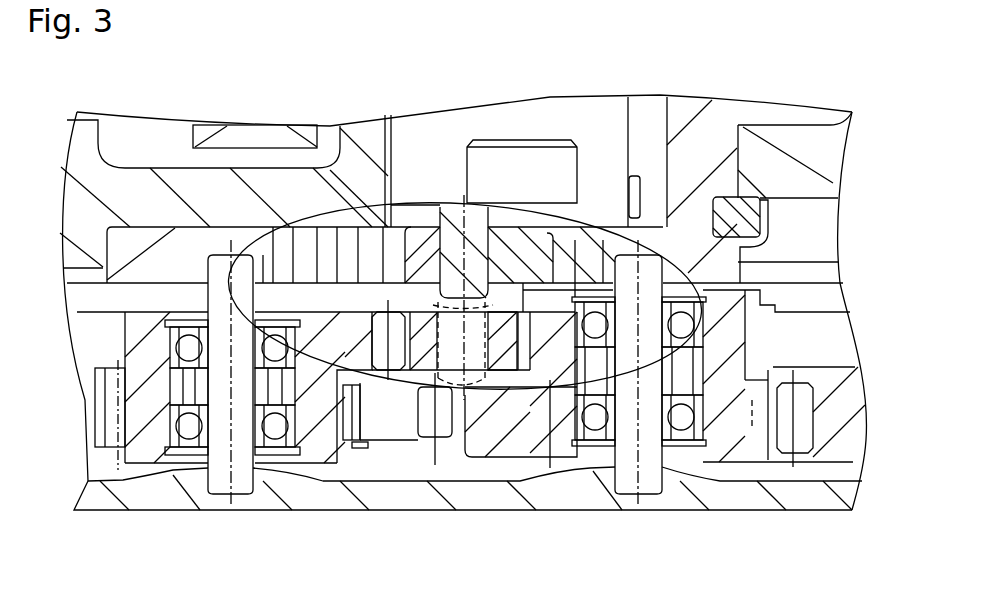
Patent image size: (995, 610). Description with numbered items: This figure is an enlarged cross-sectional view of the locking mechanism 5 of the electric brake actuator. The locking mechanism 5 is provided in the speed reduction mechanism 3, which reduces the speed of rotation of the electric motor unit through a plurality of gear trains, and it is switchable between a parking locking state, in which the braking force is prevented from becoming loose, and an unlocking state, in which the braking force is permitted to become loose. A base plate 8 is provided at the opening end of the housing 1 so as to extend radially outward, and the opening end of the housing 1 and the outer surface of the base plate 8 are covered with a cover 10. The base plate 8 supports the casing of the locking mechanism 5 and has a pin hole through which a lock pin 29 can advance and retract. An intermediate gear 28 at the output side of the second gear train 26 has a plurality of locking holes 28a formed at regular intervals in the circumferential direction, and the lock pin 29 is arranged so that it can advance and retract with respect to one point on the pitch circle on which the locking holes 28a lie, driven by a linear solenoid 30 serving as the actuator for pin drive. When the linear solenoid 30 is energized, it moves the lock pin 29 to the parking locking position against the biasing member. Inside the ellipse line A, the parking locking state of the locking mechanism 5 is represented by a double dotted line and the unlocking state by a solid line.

The housing 1 is at (688, 140).
The speed reduction mechanism 3 is at (390, 468).
The locking mechanism 5 is at (330, 462).
The base plate 8 is at (153, 267).
The cover 10 is at (743, 500).
The second gear train 26 is at (428, 382).
The intermediate gear 28 is at (420, 332).
The locking holes 28a is at (437, 345).
The lock pin 29 is at (456, 220).
The linear solenoid 30 is at (531, 115).
The ellipse line A is at (551, 380).